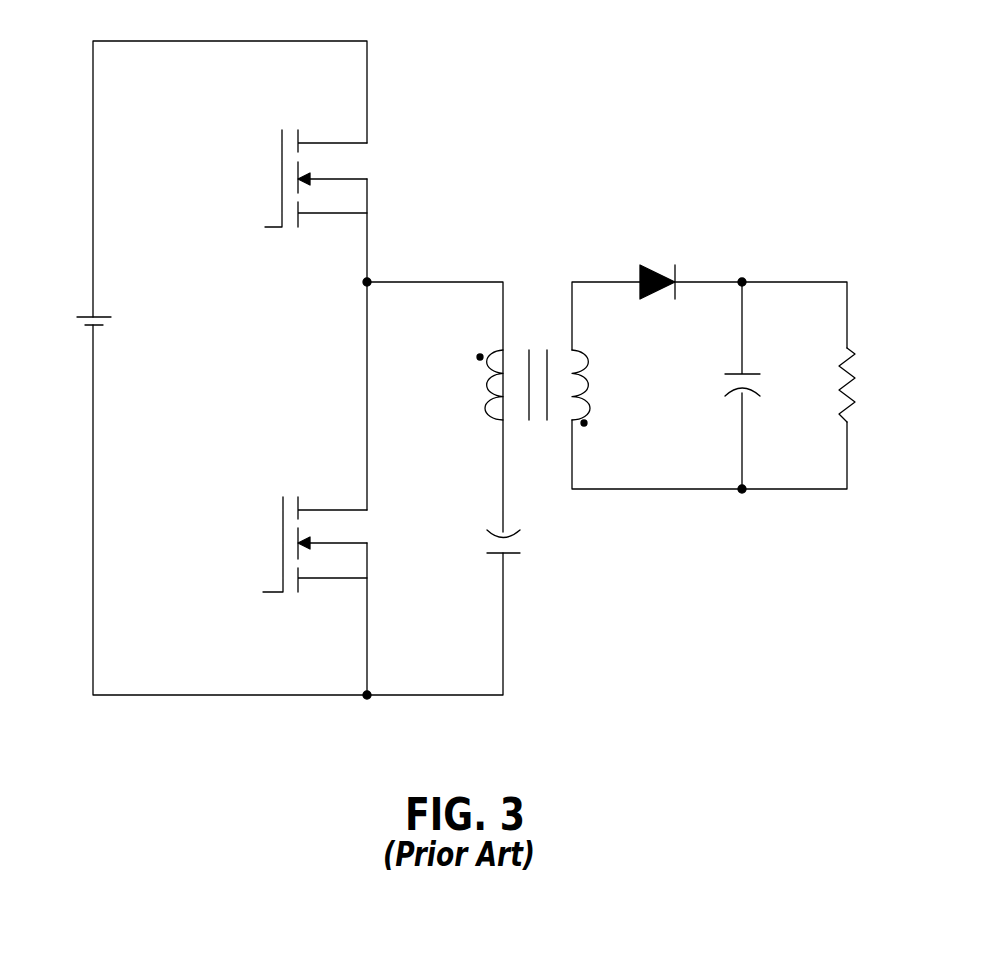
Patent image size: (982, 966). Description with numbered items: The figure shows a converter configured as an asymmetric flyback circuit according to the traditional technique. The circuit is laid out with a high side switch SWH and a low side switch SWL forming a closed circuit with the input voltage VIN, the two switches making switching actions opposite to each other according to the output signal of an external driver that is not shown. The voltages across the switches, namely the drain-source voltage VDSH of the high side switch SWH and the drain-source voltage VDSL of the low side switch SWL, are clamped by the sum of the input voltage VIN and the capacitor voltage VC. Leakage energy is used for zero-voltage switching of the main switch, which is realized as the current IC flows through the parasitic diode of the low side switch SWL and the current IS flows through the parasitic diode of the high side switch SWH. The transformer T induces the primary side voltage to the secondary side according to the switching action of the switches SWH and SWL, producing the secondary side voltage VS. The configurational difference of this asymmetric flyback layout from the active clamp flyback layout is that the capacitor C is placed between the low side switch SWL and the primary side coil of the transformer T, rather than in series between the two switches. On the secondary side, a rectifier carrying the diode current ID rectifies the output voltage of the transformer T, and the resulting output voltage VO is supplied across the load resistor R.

The input voltage VIN is at (74, 320).
The high side switch SWH is at (285, 178).
The low side switch SWL is at (285, 544).
The drain-source voltage of high side switch VDSH is at (412, 181).
The drain-source voltage of low side switch VDSL is at (396, 542).
The current Is IS is at (394, 268).
The current Ic IC is at (391, 678).
The capacitor voltage VC is at (520, 542).
The transformer T is at (533, 364).
The secondary side voltage VS is at (616, 384).
The diode current ID is at (626, 277).
The output voltage VO is at (866, 270).
The capacitor C is at (742, 385).
The load resistor R is at (863, 385).